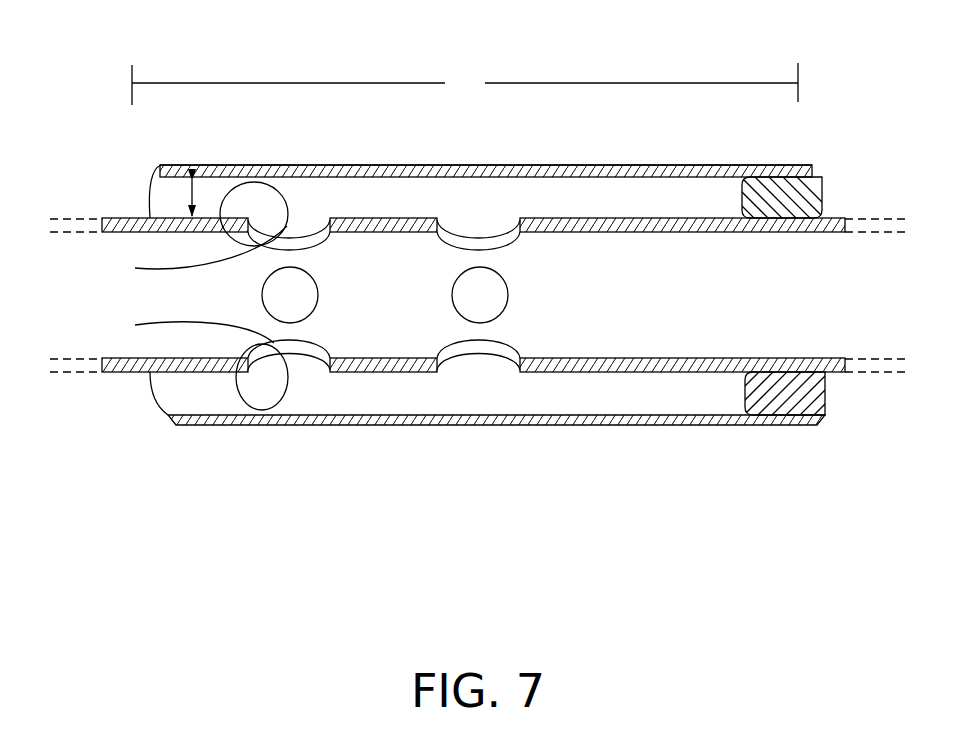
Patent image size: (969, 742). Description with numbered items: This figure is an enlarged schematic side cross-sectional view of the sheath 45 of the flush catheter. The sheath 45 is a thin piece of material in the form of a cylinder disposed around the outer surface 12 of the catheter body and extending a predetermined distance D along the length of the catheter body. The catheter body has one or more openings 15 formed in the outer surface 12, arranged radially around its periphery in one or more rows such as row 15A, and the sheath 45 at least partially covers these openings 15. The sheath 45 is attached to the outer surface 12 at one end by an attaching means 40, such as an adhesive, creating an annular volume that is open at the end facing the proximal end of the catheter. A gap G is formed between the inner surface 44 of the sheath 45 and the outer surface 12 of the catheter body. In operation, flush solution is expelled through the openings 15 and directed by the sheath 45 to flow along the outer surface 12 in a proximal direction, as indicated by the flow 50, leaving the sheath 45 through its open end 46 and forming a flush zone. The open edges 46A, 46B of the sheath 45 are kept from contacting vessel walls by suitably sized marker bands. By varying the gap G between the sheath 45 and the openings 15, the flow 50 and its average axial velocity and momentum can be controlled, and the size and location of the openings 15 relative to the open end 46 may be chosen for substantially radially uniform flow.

The outer surface 12 is at (203, 373).
The openings 15 is at (306, 220).
The row of openings 15A is at (298, 428).
The attaching means 40 is at (823, 193).
The inner surface of the sheath 44 is at (600, 178).
The sheath 45 is at (738, 167).
The open end of the sheath 46 is at (146, 157).
The open edge of the sheath 46A is at (152, 185).
The open edge of the sheath 46B is at (150, 397).
The flow of flush solution 50 is at (122, 206).
The gap G is at (210, 200).
The predetermined distance D is at (465, 84).